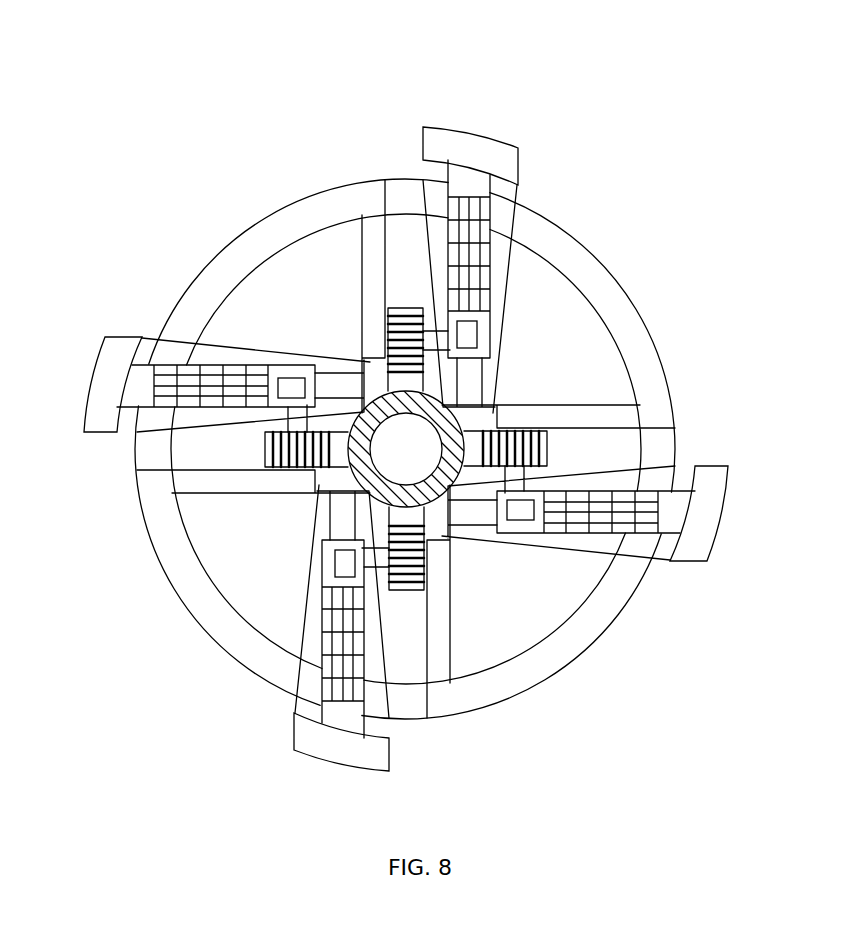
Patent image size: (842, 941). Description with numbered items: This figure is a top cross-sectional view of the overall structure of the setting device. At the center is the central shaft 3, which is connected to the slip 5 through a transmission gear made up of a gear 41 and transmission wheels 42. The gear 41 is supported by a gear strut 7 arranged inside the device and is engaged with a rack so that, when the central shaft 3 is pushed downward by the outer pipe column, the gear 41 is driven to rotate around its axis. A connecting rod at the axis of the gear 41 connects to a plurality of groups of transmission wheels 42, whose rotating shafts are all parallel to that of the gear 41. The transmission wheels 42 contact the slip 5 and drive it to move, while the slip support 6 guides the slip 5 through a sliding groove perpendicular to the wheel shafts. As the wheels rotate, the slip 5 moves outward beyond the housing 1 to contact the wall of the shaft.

The housing 1 is at (617, 308).
The central shaft 3 is at (380, 410).
The slip 5 is at (476, 150).
The slip support 6 is at (568, 543).
The gear strut 7 is at (228, 485).
The gear 41 is at (404, 302).
The transmission wheels 42 is at (488, 323).